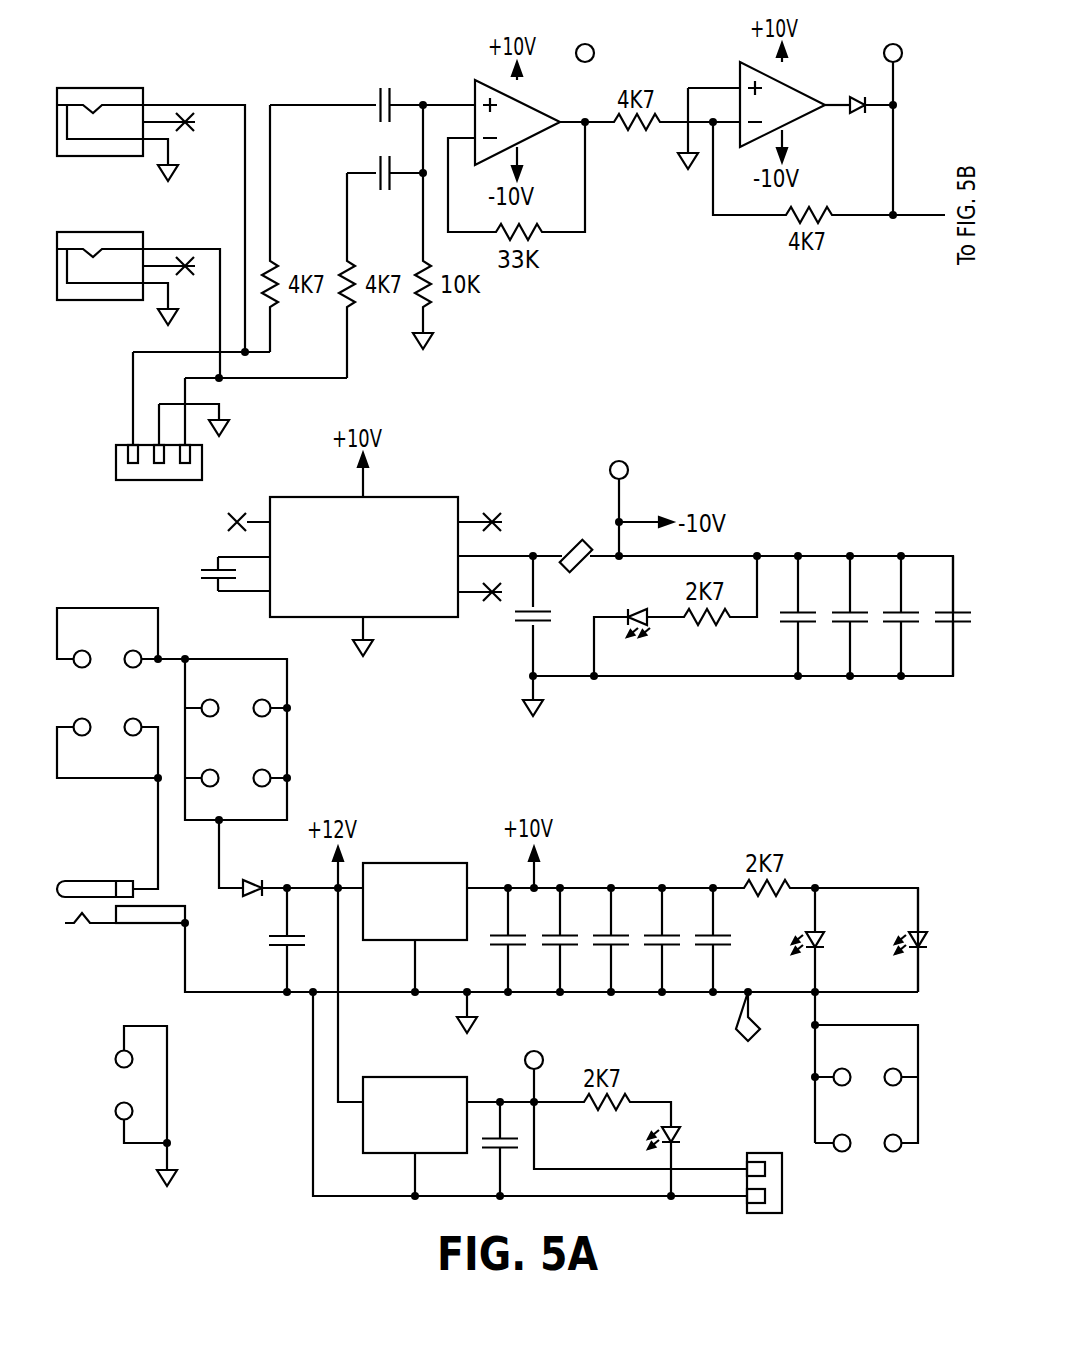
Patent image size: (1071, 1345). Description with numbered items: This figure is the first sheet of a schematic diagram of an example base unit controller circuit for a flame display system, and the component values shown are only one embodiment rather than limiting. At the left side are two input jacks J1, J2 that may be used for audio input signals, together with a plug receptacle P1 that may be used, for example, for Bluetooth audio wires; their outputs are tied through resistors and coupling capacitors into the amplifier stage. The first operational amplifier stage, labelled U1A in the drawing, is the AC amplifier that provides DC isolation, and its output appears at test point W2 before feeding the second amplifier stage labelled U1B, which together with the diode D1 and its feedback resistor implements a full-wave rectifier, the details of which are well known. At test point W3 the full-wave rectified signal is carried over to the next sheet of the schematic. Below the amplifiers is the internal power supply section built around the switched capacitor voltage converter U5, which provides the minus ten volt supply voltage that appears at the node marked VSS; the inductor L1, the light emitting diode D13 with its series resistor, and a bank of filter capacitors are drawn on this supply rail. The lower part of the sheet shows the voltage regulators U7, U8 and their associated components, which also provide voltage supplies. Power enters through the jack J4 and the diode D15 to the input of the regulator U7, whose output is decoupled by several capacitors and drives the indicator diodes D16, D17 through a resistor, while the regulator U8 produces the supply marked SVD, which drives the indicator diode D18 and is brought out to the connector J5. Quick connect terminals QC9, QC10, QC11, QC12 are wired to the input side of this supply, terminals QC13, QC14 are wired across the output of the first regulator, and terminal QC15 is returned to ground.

The input jack J1 is at (126, 119).
The input jack J2 is at (126, 263).
The plug receptacle P1 is at (159, 477).
The operational amplifier U1A is at (523, 121).
The operational amplifier U1B is at (795, 102).
The test point W2 is at (587, 37).
The test point W3 is at (893, 37).
The diode D1 is at (870, 88).
The switched capacitor voltage converter U5 is at (381, 554).
The VSS supply node VSS is at (621, 454).
The inductor L1 is at (576, 541).
The light emitting diode D13 is at (637, 607).
The quick connector QC9 is at (109, 638).
The quick connector QC10 is at (238, 693).
The quick connector QC11 is at (109, 734).
The quick connector QC12 is at (238, 763).
The power jack J4 is at (123, 888).
The diode D15 is at (254, 871).
The voltage regulator U7 is at (415, 886).
The light emitting diode D16 is at (831, 939).
The light emitting diode D17 is at (934, 939).
The quick connector QC13 is at (868, 1061).
The quick connector QC14 is at (868, 1128).
The quick connector QC15 is at (122, 1106).
The voltage regulator U8 is at (415, 1099).
The SVD supply node SVD is at (534, 1044).
The light emitting diode D18 is at (687, 1134).
The connector J5 is at (764, 1167).